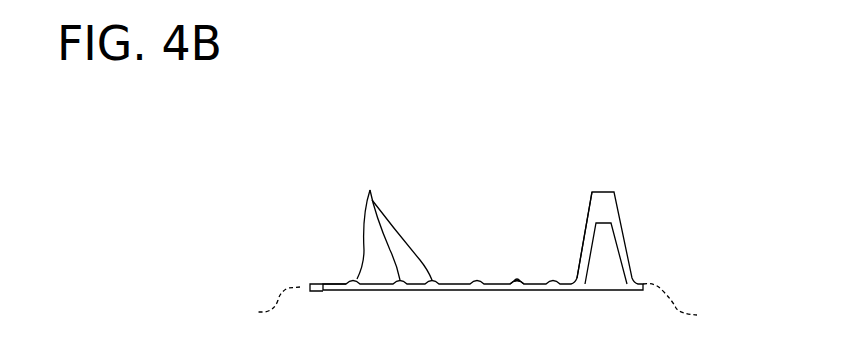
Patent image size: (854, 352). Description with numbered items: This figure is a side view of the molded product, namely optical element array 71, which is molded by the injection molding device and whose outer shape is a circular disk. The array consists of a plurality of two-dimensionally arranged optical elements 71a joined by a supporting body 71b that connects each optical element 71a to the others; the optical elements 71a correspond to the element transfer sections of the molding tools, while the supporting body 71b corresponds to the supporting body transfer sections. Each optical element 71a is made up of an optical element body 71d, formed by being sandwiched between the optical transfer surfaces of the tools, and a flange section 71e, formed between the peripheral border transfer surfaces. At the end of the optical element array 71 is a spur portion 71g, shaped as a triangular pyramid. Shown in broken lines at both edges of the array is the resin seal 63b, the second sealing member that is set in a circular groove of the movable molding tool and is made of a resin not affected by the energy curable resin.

The optical element array 71 is at (619, 170).
The optical element 71a is at (394, 222).
The supporting body 71b is at (328, 282).
The optical element body 71d is at (523, 278).
The flange section 71e is at (513, 280).
The spur portion 71g is at (588, 217).
The resin seal 63b is at (475, 303).